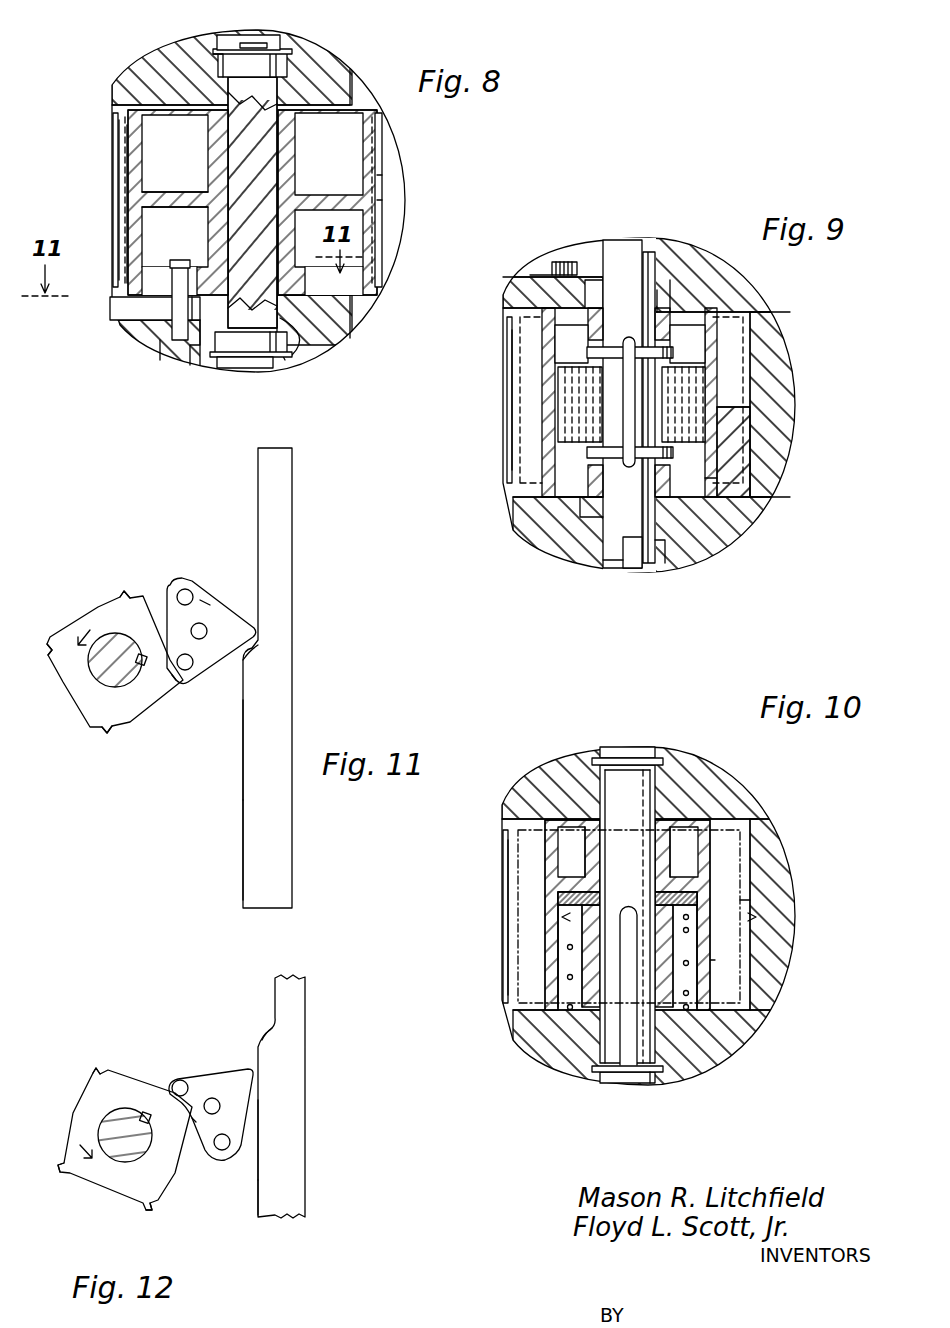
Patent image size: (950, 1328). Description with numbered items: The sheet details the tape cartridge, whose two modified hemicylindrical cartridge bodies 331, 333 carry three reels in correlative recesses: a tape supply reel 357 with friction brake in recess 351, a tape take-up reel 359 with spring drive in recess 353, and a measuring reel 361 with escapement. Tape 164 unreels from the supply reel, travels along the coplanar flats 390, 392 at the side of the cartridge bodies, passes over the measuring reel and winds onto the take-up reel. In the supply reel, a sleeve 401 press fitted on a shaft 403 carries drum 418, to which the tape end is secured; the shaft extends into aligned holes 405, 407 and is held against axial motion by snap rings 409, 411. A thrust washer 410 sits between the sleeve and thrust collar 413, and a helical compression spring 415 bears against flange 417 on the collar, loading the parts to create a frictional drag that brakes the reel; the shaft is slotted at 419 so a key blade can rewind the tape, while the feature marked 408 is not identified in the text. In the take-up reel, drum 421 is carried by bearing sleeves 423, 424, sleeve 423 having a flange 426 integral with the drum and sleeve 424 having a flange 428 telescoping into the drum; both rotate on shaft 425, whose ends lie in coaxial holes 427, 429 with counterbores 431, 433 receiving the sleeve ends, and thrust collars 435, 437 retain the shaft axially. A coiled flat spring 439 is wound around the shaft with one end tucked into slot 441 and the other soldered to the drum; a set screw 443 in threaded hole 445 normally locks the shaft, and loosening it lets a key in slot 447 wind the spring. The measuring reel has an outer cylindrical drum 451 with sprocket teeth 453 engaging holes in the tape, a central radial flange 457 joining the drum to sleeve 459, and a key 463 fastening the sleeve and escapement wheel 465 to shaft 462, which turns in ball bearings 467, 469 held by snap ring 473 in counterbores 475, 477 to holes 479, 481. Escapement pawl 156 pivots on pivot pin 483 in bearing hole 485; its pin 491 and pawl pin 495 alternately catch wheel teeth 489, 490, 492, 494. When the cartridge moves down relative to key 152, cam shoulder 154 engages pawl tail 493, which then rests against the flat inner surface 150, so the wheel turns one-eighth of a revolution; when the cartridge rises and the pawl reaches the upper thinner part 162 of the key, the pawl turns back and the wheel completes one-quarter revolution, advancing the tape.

In FIG. 8, the cartridge body 331 is at (140, 62).
In FIG. 9, the cartridge body 331 is at (720, 258).
In FIG. 10, the cartridge body 331 is at (775, 822).
In FIG. 8, the cartridge body 333 is at (320, 340).
In FIG. 9, the cartridge body 333 is at (745, 513).
In FIG. 10, the cartridge body 333 is at (762, 985).
In FIG. 8, the tape 164 is at (113, 113).
In FIG. 9, the tape 164 is at (790, 322).
In FIG. 10, the tape 164 is at (805, 867).
In FIG. 8, the flat 392 is at (122, 152).
In FIG. 9, the flat 392 is at (510, 372).
In FIG. 10, the flat 392 is at (505, 860).
In FIG. 8, the flat 390 is at (125, 222).
In FIG. 9, the flat 390 is at (507, 420).
In FIG. 10, the flat 390 is at (503, 930).
In FIG. 8, the sprocket teeth 453 is at (117, 125).
In FIG. 8, the key 463 is at (227, 128).
In FIG. 8, the central radial flange 457 is at (170, 192).
In FIG. 8, the sleeve 459 is at (292, 135).
In FIG. 8, the shaft 462 is at (272, 100).
In FIG. 8, the ball bearing 469 is at (280, 65).
In FIG. 8, the counterbore 477 is at (262, 50).
In FIG. 8, the hole 479 is at (215, 52).
In FIG. 8, the snap ring 473 is at (233, 40).
In FIG. 8, the ball bearing 467 is at (248, 345).
In FIG. 8, the hole 481 is at (288, 357).
In FIG. 8, the counterbore 475 is at (228, 360).
In FIG. 8, the measuring reel 361 is at (375, 182).
In FIG. 8, the outer cylindrical drum 451 is at (372, 205).
In FIG. 8, the escapement pawl 156 is at (110, 310).
In FIG. 11, the escapement pawl 156 is at (205, 603).
In FIG. 12, the escapement pawl 156 is at (238, 1095).
In FIG. 8, the bearing hole 485 is at (178, 335).
In FIG. 8, the pivot pin 483 is at (150, 330).
In FIG. 11, the pivot pin 483 is at (205, 625).
In FIG. 8, the snap ring 411 is at (195, 370).
In FIG. 10, the snap ring 411 is at (650, 1082).
In FIG. 8, the escapement wheel 465 is at (350, 320).
In FIG. 11, the escapement wheel 465 is at (75, 690).
In FIG. 12, the escapement wheel 465 is at (72, 1115).
In FIG. 9, the hole 427 is at (622, 240).
In FIG. 9, the counterbore 431 is at (662, 272).
In FIG. 9, the hole 429 is at (635, 568).
In FIG. 9, the slot 447 is at (607, 570).
In FIG. 9, the counterbore 433 is at (660, 548).
In FIG. 9, the shaft 425 is at (558, 545).
In FIG. 9, the bearing sleeve 424 is at (590, 517).
In FIG. 9, the flange 426 is at (700, 310).
In FIG. 9, the bearing sleeve 423 is at (672, 296).
In FIG. 9, the coiled flat spring 439 is at (575, 385).
In FIG. 9, the thrust collar 435 is at (675, 352).
In FIG. 9, the thrust collar 437 is at (675, 453).
In FIG. 9, the slot 441 is at (630, 470).
In FIG. 9, the set screw 443 is at (565, 262).
In FIG. 9, the threaded hole 445 is at (553, 272).
In FIG. 9, the recess 353 is at (745, 376).
In FIG. 9, the tape take-up reel 359 is at (735, 420).
In FIG. 9, the drum 421 is at (712, 440).
In FIG. 9, the flange 428 is at (700, 478).
In FIG. 10, the recess 351 is at (745, 935).
In FIG. 10, the tape supply reel 357 is at (712, 965).
In FIG. 10, the drum 418 is at (705, 848).
In FIG. 10, the sleeve 401 is at (690, 835).
In FIG. 10, the thrust washer 410 is at (575, 897).
In FIG. 10, the flange 417 is at (680, 902).
In FIG. 10, the thrust collar 413 is at (585, 950).
In FIG. 10, the helical compression spring 415 is at (565, 975).
In FIG. 10, the hole 405 is at (630, 752).
In FIG. 10, the snap ring 409 is at (655, 762).
In FIG. 10, the hole 407 is at (625, 1078).
In FIG. 10, the shaft 403 is at (645, 800).
In FIG. 10, the bore 408 is at (592, 812).
In FIG. 10, the slot 419 is at (628, 1020).
In FIG. 11, the upper thinner part 162 is at (282, 492).
In FIG. 12, the upper thinner part 162 is at (300, 988).
In FIG. 11, the key 152 is at (275, 705).
In FIG. 12, the key 152 is at (290, 1107).
In FIG. 11, the flat inner surface 150 is at (243, 800).
In FIG. 12, the flat inner surface 150 is at (258, 1195).
In FIG. 11, the cam shoulder 154 is at (248, 652).
In FIG. 12, the cam shoulder 154 is at (300, 1020).
In FIG. 11, the pawl pin 495 is at (180, 590).
In FIG. 12, the pawl pin 495 is at (180, 1080).
In FIG. 11, the tail 493 is at (258, 635).
In FIG. 12, the tail 493 is at (252, 1070).
In FIG. 11, the pin 491 is at (195, 665).
In FIG. 12, the pin 491 is at (225, 1142).
In FIG. 11, the tooth 494 is at (118, 595).
In FIG. 12, the tooth 494 is at (100, 1070).
In FIG. 11, the tooth 492 is at (48, 645).
In FIG. 12, the tooth 492 is at (62, 1170).
In FIG. 11, the tooth 490 is at (112, 735).
In FIG. 12, the tooth 490 is at (148, 1208).
In FIG. 11, the tooth 489 is at (173, 680).
In FIG. 12, the tooth 489 is at (195, 1122).